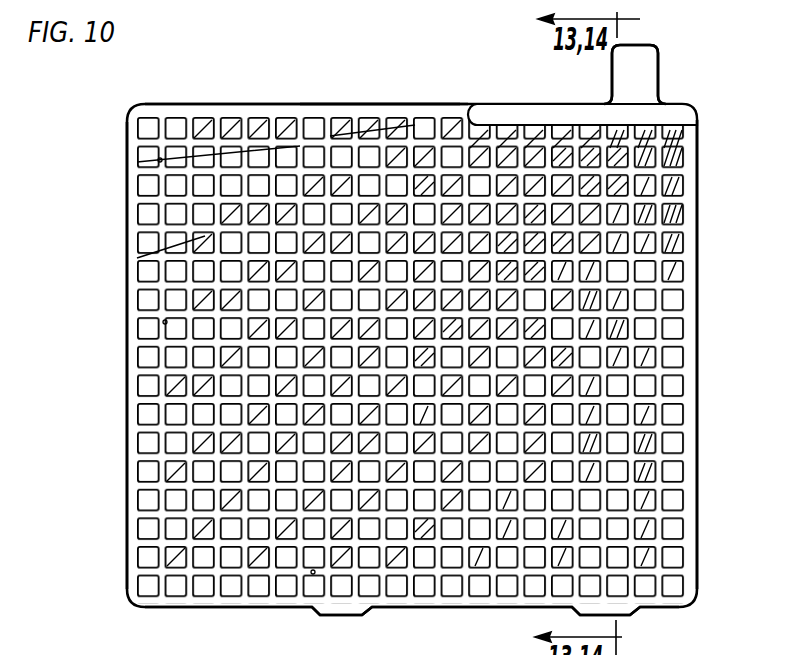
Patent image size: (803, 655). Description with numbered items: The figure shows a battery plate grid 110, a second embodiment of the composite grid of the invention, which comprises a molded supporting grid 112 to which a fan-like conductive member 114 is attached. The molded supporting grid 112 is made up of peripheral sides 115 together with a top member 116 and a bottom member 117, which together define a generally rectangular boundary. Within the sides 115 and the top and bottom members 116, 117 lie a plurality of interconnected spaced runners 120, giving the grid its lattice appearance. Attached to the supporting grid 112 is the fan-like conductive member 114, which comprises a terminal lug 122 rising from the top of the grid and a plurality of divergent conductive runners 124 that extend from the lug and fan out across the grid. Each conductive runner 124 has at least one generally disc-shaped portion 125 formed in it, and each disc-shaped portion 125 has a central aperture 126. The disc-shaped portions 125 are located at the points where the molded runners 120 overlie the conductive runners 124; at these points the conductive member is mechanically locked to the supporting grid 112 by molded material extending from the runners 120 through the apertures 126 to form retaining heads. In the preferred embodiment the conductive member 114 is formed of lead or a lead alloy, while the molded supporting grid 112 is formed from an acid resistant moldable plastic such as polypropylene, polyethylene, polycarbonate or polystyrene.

The battery plate grid 110 is at (716, 261).
The molded supporting grid 112 is at (342, 104).
The fan-like conductive member 114 is at (512, 102).
The peripheral sides 115 is at (127, 323).
The top member 116 is at (368, 114).
The bottom member 117 is at (368, 608).
The interconnected spaced runners 120 is at (286, 114).
The terminal lug 122 is at (652, 78).
The divergent conductive runners 124 is at (464, 112).
The disc-shaped portion 125 is at (160, 163).
The central aperture 126 is at (313, 572).